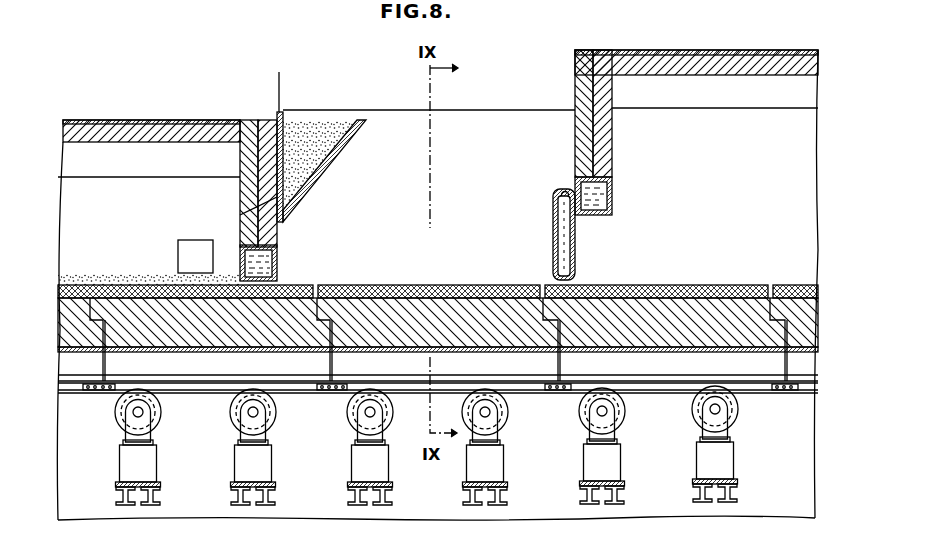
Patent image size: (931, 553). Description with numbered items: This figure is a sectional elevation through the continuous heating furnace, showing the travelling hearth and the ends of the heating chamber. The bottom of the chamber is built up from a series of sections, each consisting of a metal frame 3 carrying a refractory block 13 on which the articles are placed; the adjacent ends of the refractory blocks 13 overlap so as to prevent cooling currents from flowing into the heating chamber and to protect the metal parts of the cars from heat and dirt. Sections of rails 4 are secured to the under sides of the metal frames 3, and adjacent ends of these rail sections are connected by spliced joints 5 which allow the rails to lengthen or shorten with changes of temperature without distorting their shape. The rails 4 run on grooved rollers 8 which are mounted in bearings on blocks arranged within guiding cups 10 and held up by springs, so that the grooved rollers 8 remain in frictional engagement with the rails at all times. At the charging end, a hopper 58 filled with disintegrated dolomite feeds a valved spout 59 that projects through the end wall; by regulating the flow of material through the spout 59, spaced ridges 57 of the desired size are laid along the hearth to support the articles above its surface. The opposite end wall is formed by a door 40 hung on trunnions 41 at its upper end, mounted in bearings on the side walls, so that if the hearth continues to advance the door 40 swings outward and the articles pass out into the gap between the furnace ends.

The metal frame 3 is at (222, 353).
The rails 4 is at (298, 386).
The spliced joints 5 is at (332, 392).
The grooved rollers 8 is at (160, 421).
The guiding cups 10 is at (157, 465).
The refractory blocks 13 is at (306, 285).
The door 40 is at (553, 252).
The trunnions 41 is at (564, 191).
The ridges 57 is at (127, 273).
The hoppers 58 is at (330, 168).
The valved spouts 59 is at (280, 221).